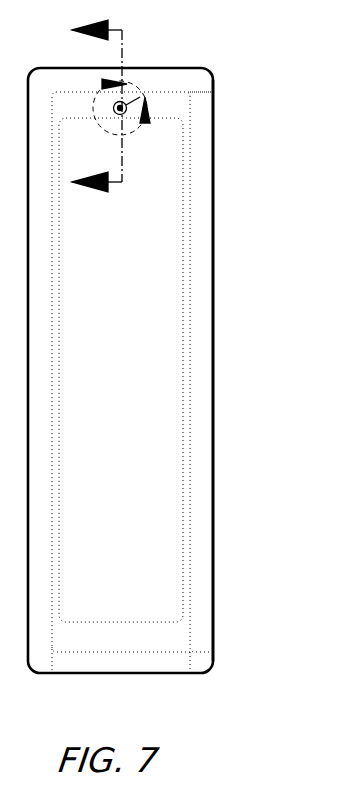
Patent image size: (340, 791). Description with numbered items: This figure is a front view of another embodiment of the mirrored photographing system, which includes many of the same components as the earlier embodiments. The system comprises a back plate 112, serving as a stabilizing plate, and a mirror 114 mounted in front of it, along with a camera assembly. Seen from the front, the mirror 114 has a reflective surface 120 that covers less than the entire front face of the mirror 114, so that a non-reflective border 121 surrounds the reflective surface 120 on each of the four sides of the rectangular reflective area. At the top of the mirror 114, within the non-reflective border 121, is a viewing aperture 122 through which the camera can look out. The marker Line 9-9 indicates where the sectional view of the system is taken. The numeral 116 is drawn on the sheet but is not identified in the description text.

The housing 116 is at (184, 340).
The back plate 112 is at (261, 370).
The mirror 114 is at (169, 382).
The reflective surface 120 is at (178, 370).
The non-reflective border 121 is at (212, 74).
The viewing aperture 122 is at (149, 73).
The Line 9- 9 is at (82, 106).